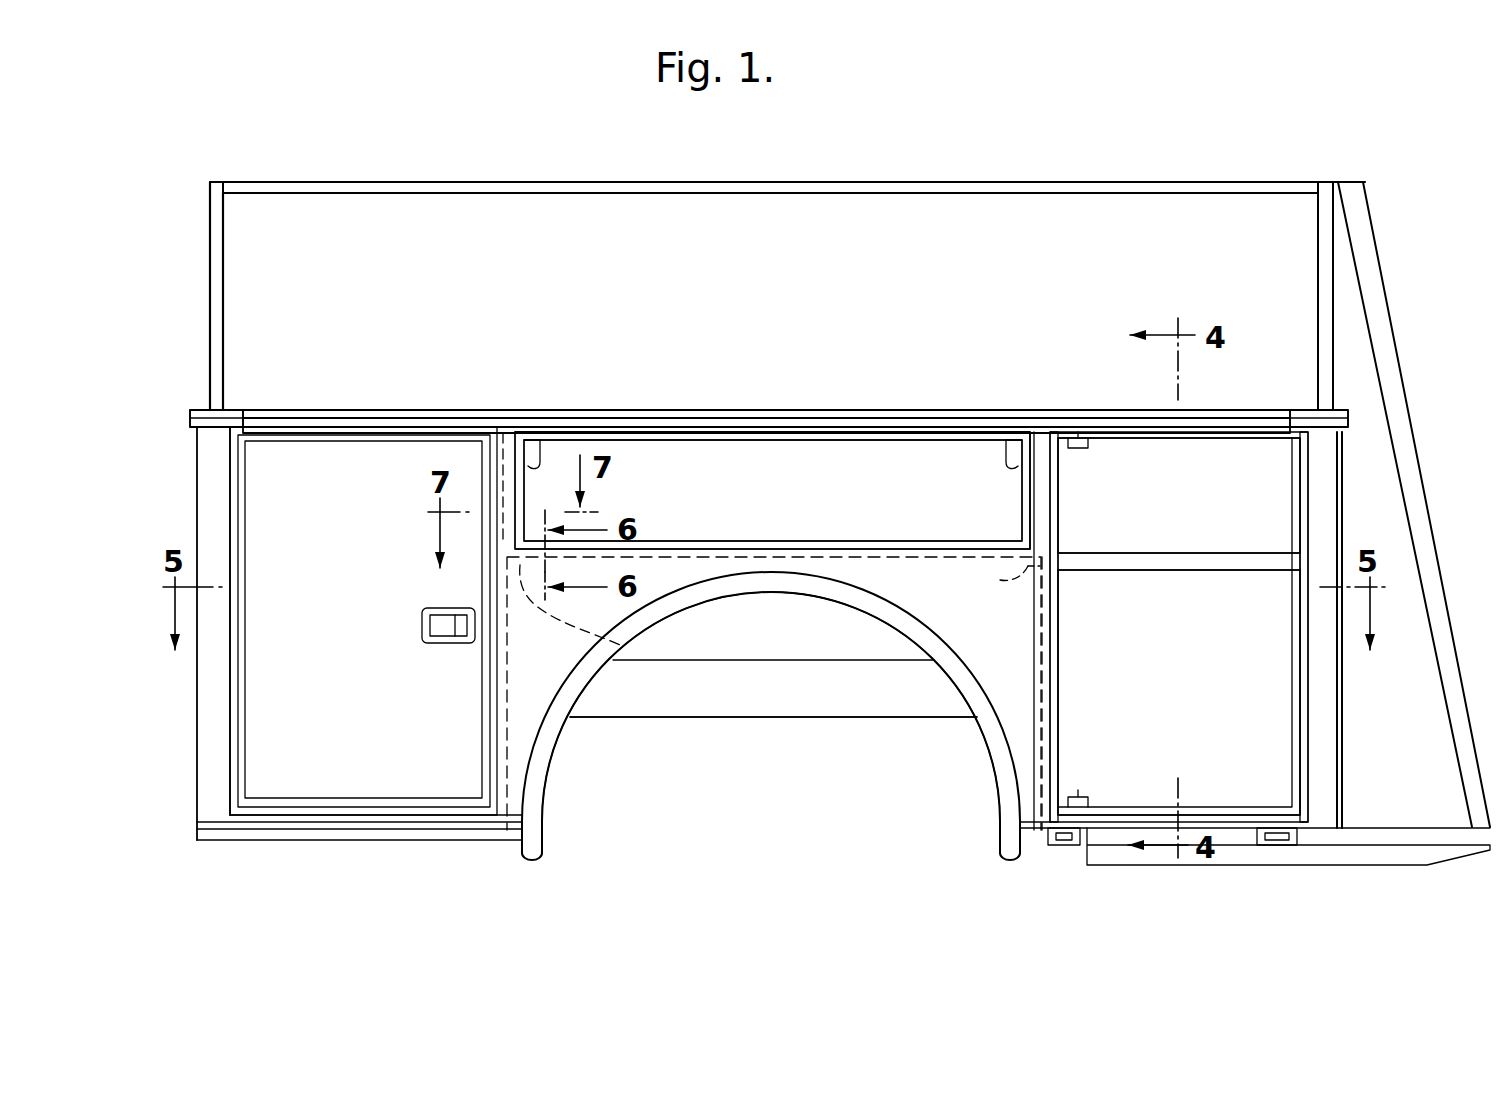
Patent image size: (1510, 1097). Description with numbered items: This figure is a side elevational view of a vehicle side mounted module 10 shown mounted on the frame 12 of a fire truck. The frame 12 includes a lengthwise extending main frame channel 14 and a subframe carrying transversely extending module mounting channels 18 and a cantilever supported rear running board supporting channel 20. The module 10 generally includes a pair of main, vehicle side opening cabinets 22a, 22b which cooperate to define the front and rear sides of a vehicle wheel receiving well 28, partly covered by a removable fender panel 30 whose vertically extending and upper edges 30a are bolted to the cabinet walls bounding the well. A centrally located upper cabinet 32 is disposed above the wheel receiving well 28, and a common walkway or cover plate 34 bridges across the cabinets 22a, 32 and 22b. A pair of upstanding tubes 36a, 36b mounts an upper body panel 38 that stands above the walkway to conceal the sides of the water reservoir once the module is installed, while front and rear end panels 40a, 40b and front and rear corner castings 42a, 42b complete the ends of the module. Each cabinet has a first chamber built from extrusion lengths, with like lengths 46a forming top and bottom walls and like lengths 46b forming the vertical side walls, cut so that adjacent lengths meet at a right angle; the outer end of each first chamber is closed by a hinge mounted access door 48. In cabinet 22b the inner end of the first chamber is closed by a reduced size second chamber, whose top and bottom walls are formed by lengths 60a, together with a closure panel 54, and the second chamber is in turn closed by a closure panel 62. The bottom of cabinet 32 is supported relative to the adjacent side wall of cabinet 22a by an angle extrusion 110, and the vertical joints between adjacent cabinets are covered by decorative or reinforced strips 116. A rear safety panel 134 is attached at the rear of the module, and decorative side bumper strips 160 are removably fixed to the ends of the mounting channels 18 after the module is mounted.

The vehicle side mounted module 10 is at (1048, 144).
The frame 12 is at (700, 722).
The main frame channel 14 is at (790, 690).
The module mounting channel 18 is at (232, 800).
The rear running board supporting channel 20 is at (1380, 862).
The main vehicle side opening cabinet 22a is at (440, 408).
The main vehicle side opening cabinet 22b is at (1222, 407).
The vehicle wheel receiving well 28 is at (862, 762).
The removable fender panel 30 is at (555, 655).
The vertically extending and upper edges of fender panel 30a is at (683, 576).
The upper cabinet 32 is at (850, 446).
The walkway or cover plate 34 is at (692, 402).
The upstanding tube 36a is at (224, 262).
The upstanding tube 36b is at (1317, 232).
The upper body panel 38 is at (938, 248).
The front end panel 40a is at (192, 446).
The rear end panel 40b is at (1344, 465).
The front corner casting 42a is at (218, 404).
The rear corner casting 42b is at (1342, 398).
The first chamber top and bottom wall length 46a is at (1105, 445).
The first chamber side wall length 46b is at (1060, 650).
The hinge mounted access door 48 is at (323, 622).
The closure panel 54 is at (1173, 513).
The second chamber top and bottom wall length 60a is at (1130, 575).
The closure panel 62 is at (1183, 660).
The angle extrusion 110 is at (624, 645).
The decorative and/or reinforced strip 116 is at (525, 472).
The rear safety panel 134 is at (1412, 702).
The decorative side bumper strip 160 is at (365, 850).